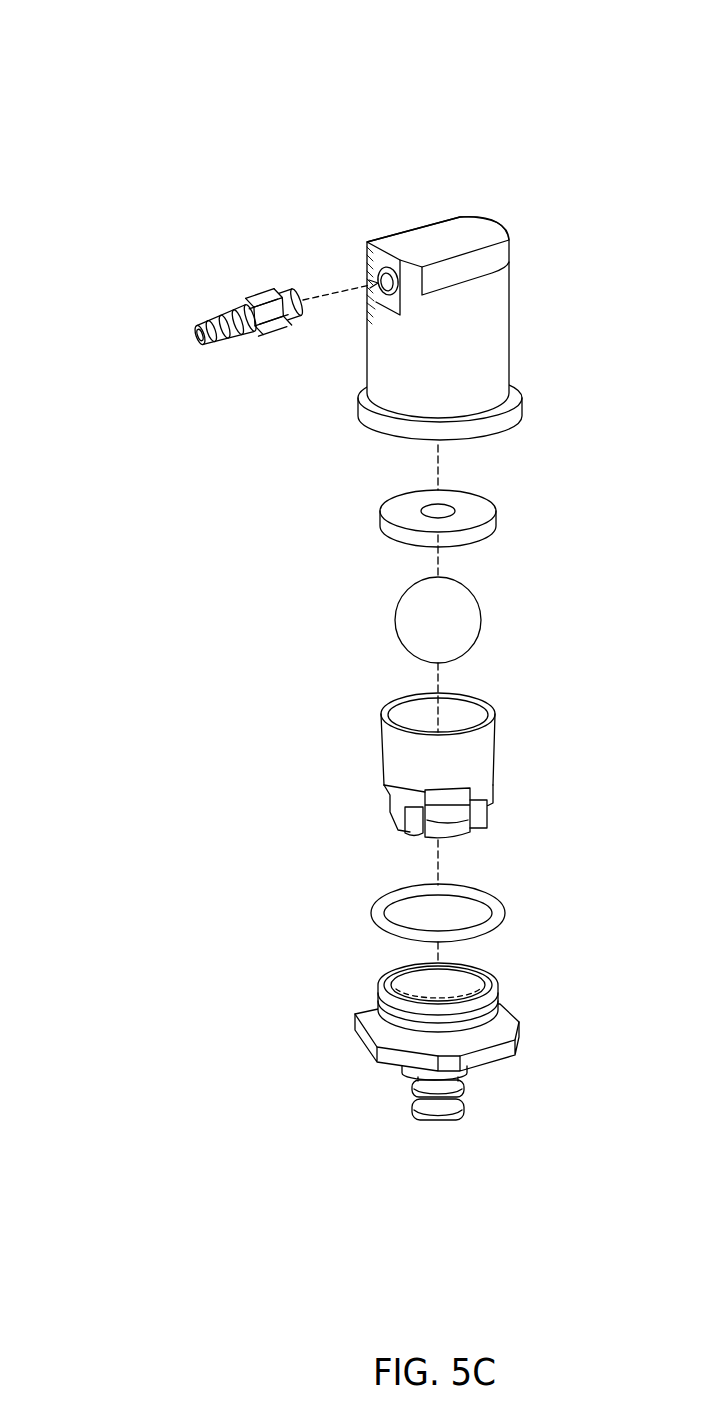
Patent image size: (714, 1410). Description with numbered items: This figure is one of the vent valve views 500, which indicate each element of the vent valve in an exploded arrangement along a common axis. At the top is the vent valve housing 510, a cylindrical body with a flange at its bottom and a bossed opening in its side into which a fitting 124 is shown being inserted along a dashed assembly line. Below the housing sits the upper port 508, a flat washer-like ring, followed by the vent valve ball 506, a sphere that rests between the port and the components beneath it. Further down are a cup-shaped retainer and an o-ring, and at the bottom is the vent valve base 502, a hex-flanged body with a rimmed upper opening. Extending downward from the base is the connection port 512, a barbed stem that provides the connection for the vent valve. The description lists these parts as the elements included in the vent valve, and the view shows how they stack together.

The vent valve views 500 is at (76, 124).
The vent valve housing 510 is at (442, 237).
The hose fitting 124 is at (200, 331).
The upper port 508 is at (438, 508).
The vent valve ball 506 is at (466, 618).
The vent valve base 502 is at (505, 1003).
The connection port 512 is at (464, 1112).